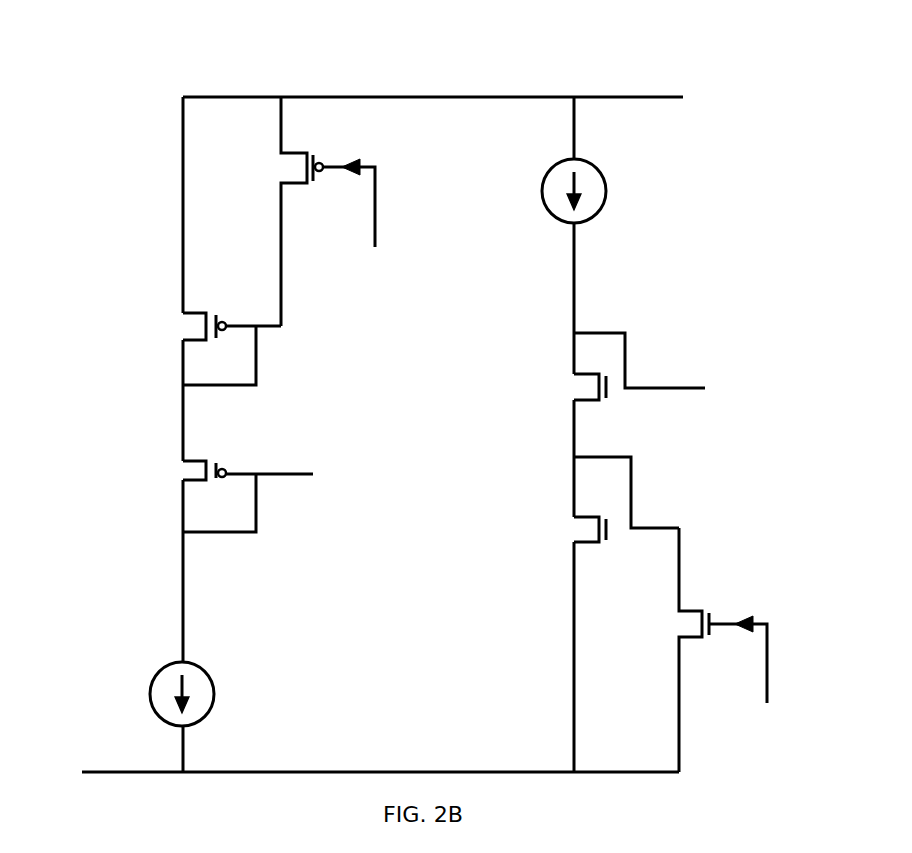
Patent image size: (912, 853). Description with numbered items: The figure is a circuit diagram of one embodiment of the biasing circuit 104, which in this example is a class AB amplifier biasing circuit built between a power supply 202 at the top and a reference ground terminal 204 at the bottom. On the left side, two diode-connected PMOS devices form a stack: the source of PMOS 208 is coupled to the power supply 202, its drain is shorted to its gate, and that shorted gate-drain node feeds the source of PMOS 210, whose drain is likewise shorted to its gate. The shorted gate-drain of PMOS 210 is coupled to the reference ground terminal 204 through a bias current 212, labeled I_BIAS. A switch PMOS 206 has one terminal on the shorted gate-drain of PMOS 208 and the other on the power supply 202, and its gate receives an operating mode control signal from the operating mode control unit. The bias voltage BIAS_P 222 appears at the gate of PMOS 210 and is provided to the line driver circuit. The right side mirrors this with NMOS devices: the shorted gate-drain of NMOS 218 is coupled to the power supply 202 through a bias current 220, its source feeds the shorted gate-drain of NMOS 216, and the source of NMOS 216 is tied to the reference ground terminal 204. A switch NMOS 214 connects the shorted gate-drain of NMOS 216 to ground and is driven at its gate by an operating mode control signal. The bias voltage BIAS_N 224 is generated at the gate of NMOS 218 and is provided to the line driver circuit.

The biasing circuit 104 is at (144, 88).
The power supply 202 is at (696, 78).
The reference ground terminal 204 is at (137, 774).
The switch PMOS 206 is at (284, 166).
The diode-connected PMOS 208 is at (177, 331).
The diode-connected PMOS 210 is at (177, 487).
The bias current (I_BIAS) 212 is at (147, 691).
The switch NMOS 214 is at (672, 630).
The diode-connected NMOS 216 is at (570, 527).
The diode-connected NMOS 218 is at (570, 387).
The bias current (I_BIAS) 220 is at (540, 188).
The bias voltage BIAS_P 222 is at (328, 450).
The bias voltage BIAS_N 224 is at (698, 360).